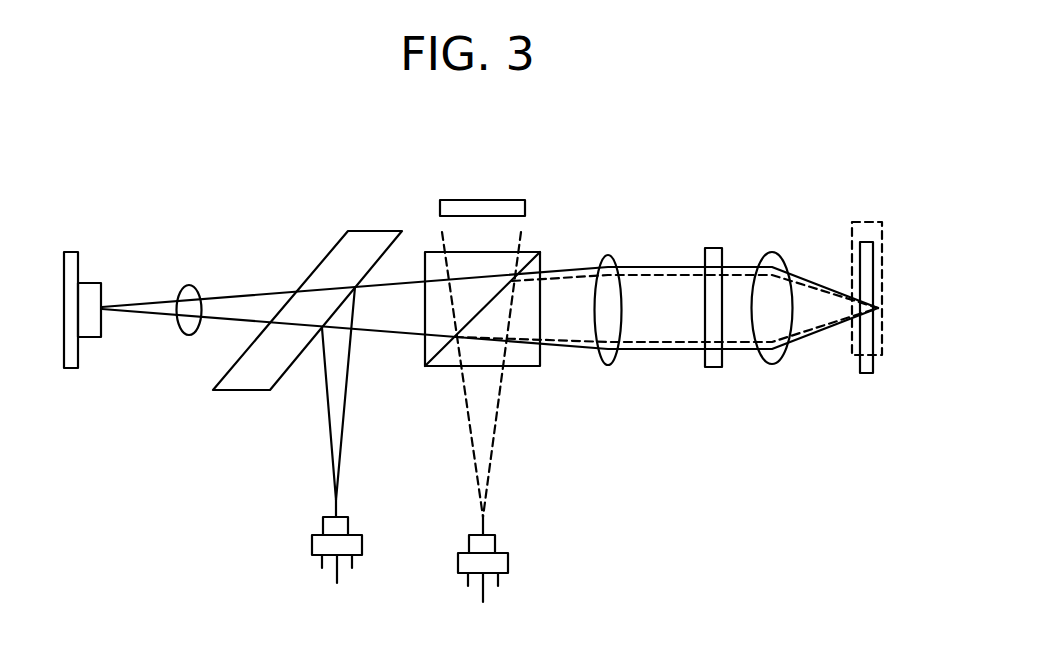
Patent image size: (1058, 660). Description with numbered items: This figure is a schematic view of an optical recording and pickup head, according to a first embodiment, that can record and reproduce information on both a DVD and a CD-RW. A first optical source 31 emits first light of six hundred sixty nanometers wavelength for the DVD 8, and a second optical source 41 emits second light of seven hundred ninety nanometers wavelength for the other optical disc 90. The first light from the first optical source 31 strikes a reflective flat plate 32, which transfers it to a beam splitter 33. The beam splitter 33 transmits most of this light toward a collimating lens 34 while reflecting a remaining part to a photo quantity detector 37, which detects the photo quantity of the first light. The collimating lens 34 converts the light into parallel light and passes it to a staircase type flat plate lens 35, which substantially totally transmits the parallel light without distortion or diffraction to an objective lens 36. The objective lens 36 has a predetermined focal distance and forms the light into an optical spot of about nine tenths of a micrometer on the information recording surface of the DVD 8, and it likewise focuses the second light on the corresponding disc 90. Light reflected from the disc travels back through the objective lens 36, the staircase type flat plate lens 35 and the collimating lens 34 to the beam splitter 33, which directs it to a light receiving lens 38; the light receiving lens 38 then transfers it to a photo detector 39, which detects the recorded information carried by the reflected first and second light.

The DVD 8 is at (873, 375).
The optical disc 90 is at (883, 266).
The first optical source 31 is at (362, 546).
The reflective flat plate 32 is at (375, 230).
The beam splitter 33 is at (520, 367).
The collimating lens 34 is at (605, 256).
The staircase type flat plate lens 35 is at (712, 367).
The objective lens 36 is at (770, 253).
The photo quantity detector 37 is at (525, 212).
The light receiving lens 38 is at (193, 285).
The photo detector 39 is at (74, 252).
The second optical source 41 is at (508, 564).